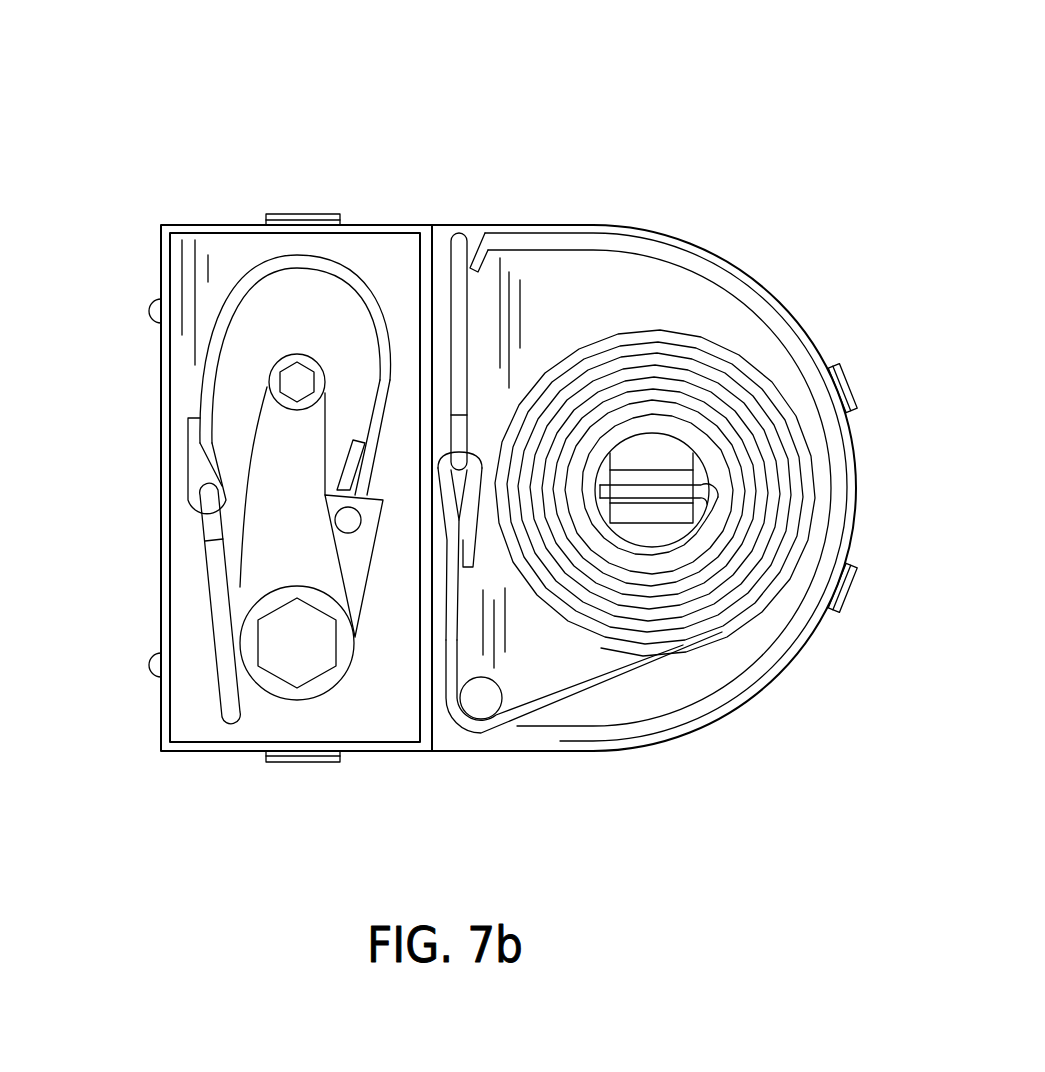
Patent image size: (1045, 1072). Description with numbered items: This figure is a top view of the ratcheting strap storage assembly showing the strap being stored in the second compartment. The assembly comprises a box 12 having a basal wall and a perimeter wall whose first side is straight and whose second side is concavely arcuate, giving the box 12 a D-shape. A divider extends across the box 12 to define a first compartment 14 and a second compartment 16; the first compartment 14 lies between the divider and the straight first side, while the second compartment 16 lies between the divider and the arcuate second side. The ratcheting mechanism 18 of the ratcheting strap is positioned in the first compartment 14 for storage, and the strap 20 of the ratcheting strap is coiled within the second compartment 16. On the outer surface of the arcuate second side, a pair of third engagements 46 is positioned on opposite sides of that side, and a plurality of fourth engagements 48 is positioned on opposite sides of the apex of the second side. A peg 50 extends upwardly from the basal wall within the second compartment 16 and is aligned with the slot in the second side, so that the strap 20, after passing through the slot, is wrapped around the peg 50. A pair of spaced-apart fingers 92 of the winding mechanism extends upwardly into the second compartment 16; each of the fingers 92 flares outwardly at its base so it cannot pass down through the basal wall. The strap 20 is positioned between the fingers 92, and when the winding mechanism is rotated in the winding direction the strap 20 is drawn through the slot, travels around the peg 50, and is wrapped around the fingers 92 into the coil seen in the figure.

The box 12 is at (162, 224).
The first compartment 14 is at (206, 252).
The second compartment 16 is at (574, 290).
The ratcheting mechanism 18 is at (322, 366).
The strap 20 is at (704, 340).
The third engagements 46 is at (297, 213).
The fourth engagements 48 is at (848, 386).
The peg 50 is at (572, 680).
The fingers 92 is at (657, 522).